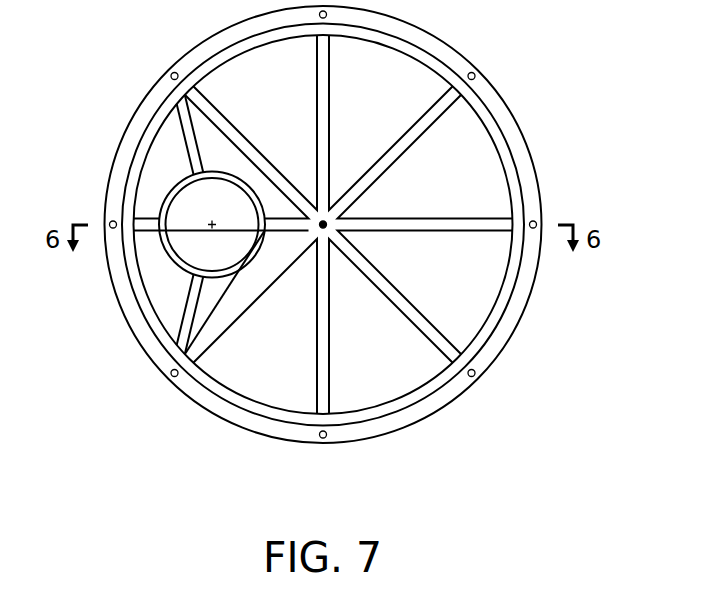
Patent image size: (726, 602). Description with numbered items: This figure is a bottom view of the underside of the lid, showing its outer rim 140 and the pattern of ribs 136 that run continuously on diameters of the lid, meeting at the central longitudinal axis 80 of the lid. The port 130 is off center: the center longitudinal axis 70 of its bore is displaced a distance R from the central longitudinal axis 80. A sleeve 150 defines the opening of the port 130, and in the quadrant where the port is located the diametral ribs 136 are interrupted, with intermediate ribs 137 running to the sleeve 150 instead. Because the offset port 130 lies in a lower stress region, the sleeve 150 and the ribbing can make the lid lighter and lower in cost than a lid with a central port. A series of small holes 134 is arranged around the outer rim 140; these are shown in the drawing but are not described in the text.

The center longitudinal axis 70 is at (213, 228).
The central longitudinal axis 80 is at (319, 228).
The port 130 is at (178, 249).
The mounting holes 134 is at (323, 438).
The ribs 136 is at (330, 97).
The intermediate ribs 137 is at (192, 127).
The outer rim 140 is at (251, 407).
The sleeve 150 is at (172, 190).